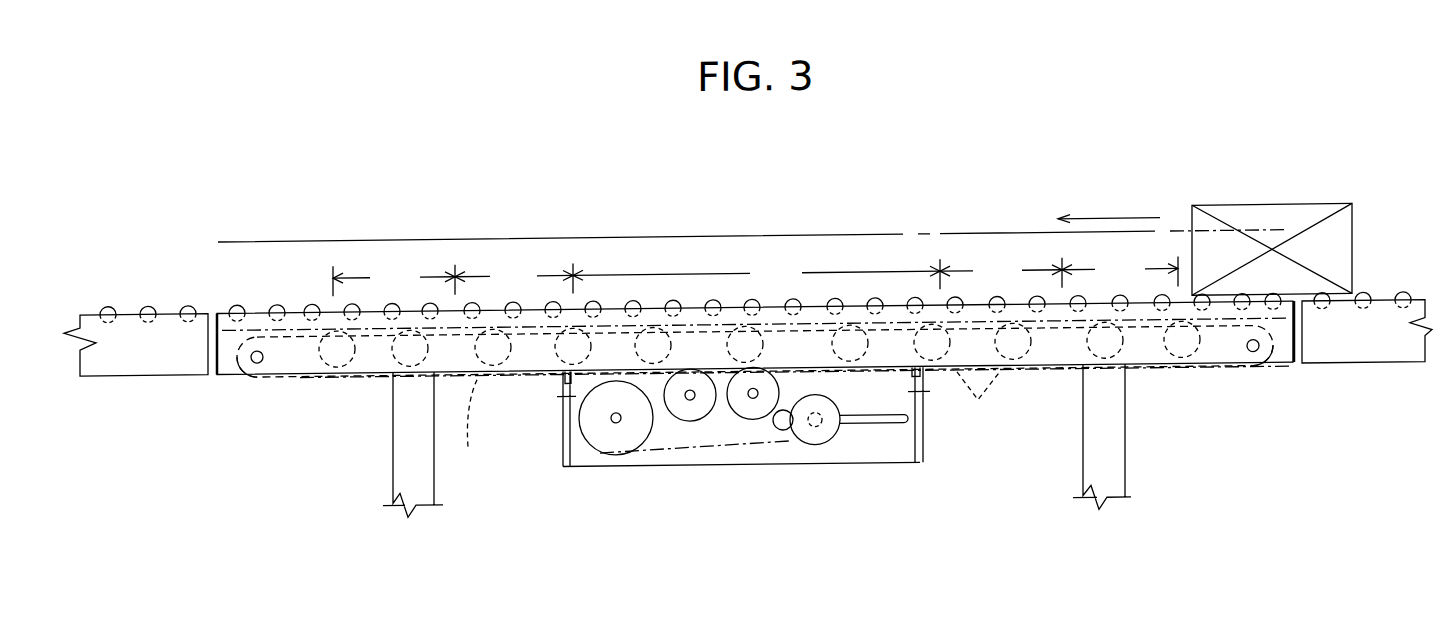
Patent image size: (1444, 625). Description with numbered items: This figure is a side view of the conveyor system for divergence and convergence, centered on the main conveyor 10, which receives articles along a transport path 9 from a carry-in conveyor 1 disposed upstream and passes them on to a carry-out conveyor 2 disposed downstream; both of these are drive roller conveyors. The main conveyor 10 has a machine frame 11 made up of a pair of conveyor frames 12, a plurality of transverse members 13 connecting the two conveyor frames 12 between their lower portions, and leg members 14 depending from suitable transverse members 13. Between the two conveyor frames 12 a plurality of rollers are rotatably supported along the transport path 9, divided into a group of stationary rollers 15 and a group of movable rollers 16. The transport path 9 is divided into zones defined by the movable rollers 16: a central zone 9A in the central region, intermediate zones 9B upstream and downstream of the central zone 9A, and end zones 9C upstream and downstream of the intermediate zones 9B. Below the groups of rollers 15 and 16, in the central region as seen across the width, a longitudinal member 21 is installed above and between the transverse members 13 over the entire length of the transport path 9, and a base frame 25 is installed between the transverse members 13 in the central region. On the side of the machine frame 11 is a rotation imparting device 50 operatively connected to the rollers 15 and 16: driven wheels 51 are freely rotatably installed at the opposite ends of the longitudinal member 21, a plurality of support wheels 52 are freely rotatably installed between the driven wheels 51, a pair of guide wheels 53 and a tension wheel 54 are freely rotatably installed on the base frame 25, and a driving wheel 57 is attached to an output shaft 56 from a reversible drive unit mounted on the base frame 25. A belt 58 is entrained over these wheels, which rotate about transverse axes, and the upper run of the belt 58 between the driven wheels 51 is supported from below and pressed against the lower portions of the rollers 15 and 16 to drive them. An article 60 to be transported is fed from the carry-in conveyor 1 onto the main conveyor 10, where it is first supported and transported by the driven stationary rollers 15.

The carry-in conveyor 1 is at (1370, 383).
The carry-out conveyor 2 is at (140, 379).
The transport path 9 is at (577, 244).
The central zone 9A is at (756, 273).
The intermediate zone 9B is at (758, 274).
The end zone 9C is at (755, 273).
The main conveyor 10 is at (345, 386).
The machine frame 11 is at (222, 379).
The conveyor frame 12 is at (1286, 383).
The transverse member 13 is at (542, 379).
The leg member 14 is at (403, 476).
The stationary roller 15 is at (310, 310).
The movable roller 16 is at (633, 310).
The longitudinal member 21 is at (298, 384).
The base frame 25 is at (907, 476).
The rotation imparting device 50 is at (724, 457).
The driven wheel 51 is at (247, 382).
The support wheel 52 is at (978, 409).
The guide wheel 53 is at (743, 412).
The tension wheel 54 is at (815, 447).
The output shaft 56 is at (613, 428).
The driving wheel 57 is at (591, 455).
The belt 58 is at (475, 432).
The article 60 is at (1323, 233).